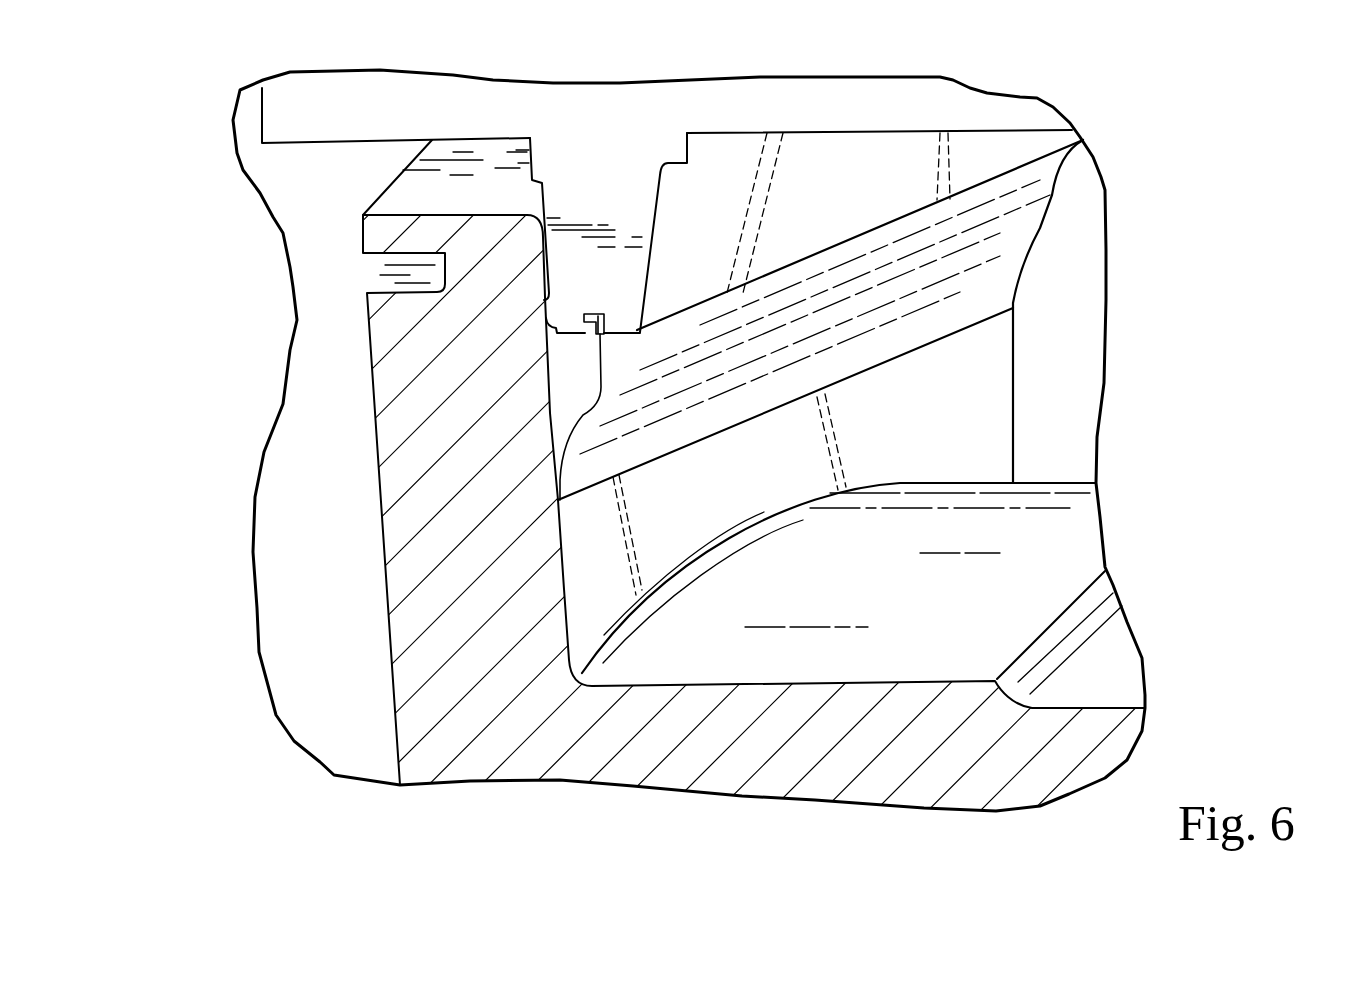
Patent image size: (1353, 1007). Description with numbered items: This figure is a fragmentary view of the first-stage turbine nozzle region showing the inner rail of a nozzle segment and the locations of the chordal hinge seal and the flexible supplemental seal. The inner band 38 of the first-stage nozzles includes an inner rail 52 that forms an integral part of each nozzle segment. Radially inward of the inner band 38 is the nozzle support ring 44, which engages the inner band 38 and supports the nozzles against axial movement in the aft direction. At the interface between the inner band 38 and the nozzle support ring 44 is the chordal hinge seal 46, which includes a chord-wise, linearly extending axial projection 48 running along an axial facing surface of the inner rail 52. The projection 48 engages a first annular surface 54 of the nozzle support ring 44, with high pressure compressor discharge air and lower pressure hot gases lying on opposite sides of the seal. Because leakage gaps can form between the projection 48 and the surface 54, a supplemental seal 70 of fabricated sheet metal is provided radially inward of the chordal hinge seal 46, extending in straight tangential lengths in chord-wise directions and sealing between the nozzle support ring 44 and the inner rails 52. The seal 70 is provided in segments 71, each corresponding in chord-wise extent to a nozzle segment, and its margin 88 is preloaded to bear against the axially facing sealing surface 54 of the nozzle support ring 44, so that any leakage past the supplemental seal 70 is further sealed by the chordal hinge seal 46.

The inner band 38 is at (357, 95).
The nozzle support ring 44 is at (442, 639).
The chordal hinge seal 46 is at (514, 318).
The axial projection 48 is at (557, 309).
The inner rail 52 is at (588, 195).
The first annular surface 54 is at (767, 494).
The supplemental seal 70 is at (820, 364).
The seal segment 71 is at (977, 255).
The margin 88 is at (648, 455).